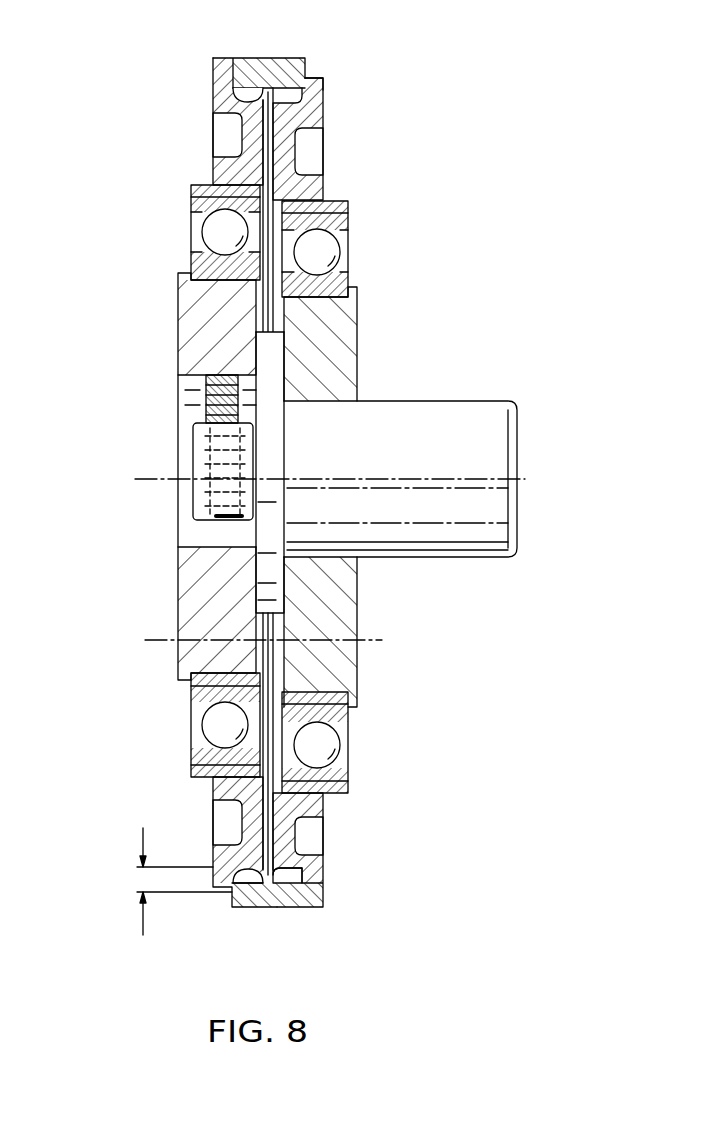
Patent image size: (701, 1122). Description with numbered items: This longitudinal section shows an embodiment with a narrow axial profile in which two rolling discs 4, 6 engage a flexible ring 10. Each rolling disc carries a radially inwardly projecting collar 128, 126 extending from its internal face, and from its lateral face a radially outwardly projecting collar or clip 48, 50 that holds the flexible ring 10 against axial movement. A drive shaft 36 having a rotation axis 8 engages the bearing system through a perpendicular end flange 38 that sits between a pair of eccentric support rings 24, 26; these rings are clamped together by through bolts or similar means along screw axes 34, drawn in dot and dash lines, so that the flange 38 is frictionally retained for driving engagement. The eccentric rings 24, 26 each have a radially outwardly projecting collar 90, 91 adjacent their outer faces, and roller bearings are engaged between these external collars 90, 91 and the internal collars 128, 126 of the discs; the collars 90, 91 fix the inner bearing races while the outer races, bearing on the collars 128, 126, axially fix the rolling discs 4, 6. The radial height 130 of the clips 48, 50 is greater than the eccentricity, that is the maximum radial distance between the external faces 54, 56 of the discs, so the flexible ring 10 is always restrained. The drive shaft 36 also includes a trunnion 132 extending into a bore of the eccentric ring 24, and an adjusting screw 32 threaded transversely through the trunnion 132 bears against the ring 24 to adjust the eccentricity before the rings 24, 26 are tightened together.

The flexible ring 10 is at (268, 58).
The collar or clip 48 is at (222, 70).
The collar or clip 50 is at (312, 80).
The rolling disc 4 is at (240, 137).
The rolling disc 6 is at (290, 145).
The radially inwardly projecting collar 128 is at (192, 192).
The radially inwardly projecting collar 126 is at (350, 214).
The radially outwardly projecting collar 90 is at (182, 274).
The radially outwardly projecting collar 91 is at (356, 288).
The end flange 38 is at (268, 380).
The drive shaft 36 is at (462, 418).
The adjusting screw 32 is at (206, 396).
The rotation axis 8 is at (150, 478).
The trunnion 132 is at (195, 493).
The eccentric support ring 24 is at (200, 597).
The eccentric support ring 26 is at (330, 612).
The screw axes 34 is at (158, 642).
The height of the collars or clips 130 is at (140, 878).
The external face 54 is at (258, 870).
The external face 56 is at (292, 875).